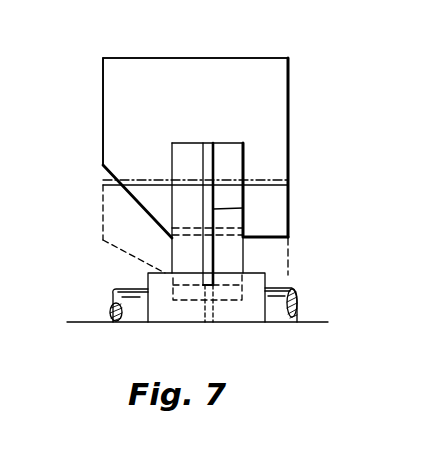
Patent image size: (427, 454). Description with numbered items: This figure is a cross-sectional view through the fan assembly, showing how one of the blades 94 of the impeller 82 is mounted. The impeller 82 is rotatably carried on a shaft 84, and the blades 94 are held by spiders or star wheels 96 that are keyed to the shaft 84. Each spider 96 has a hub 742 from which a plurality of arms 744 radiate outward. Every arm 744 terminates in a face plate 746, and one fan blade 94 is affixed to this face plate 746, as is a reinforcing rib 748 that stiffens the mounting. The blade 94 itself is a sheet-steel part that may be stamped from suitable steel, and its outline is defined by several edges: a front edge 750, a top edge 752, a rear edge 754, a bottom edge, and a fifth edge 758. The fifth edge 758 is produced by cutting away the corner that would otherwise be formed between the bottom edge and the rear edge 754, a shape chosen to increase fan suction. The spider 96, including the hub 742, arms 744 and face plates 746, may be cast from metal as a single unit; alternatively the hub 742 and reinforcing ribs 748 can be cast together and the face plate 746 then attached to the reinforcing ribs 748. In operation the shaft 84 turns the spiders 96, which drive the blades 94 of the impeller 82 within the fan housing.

The front edge 750 is at (288, 95).
The top edge 752 is at (184, 63).
The rear edge 754 is at (103, 97).
The blade 94 is at (265, 133).
The face plate 746 is at (243, 168).
The reinforcing rib 748 is at (243, 208).
The arm 744 is at (243, 258).
The fifth edge 758 is at (140, 205).
The hub 742 is at (148, 278).
The shaft 84 is at (280, 307).
The spider 96 is at (252, 314).
The impeller 82 is at (330, 262).